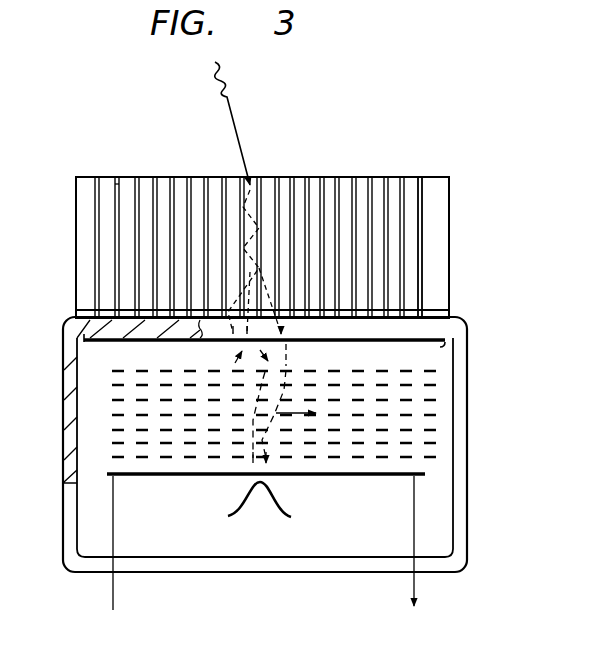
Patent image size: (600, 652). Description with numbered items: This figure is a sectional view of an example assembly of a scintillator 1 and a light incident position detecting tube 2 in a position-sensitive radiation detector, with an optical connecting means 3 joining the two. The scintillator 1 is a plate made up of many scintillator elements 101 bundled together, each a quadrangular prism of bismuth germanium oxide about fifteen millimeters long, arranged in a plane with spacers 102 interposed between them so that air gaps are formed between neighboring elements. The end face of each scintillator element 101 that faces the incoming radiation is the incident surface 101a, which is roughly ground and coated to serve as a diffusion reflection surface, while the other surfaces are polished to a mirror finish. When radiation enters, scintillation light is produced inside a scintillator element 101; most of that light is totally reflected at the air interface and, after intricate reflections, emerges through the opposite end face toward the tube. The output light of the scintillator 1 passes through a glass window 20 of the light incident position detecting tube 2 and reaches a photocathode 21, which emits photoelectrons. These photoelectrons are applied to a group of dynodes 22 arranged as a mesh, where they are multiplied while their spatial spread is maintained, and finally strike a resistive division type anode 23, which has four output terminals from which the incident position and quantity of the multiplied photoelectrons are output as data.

The scintillator 1 is at (258, 227).
The scintillator element 101 is at (123, 238).
The incident surface 101a is at (123, 173).
The spacer 102 is at (421, 177).
The light incident position detecting tube 2 is at (279, 443).
The optical connecting means 3 is at (455, 309).
The glass window 20 is at (76, 326).
The photocathode 21 is at (446, 342).
The group of dynodes 22 is at (474, 362).
The resistive division type anode 23 is at (433, 474).